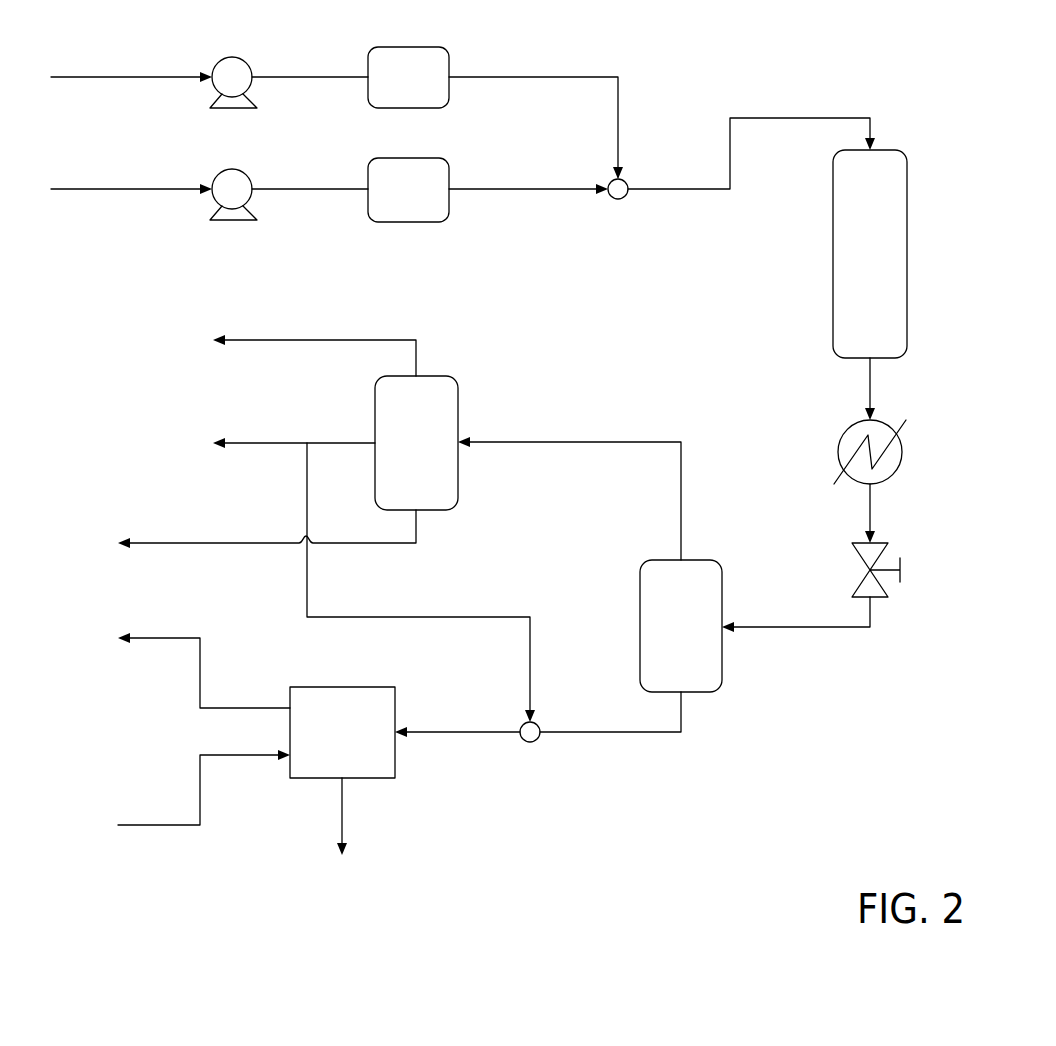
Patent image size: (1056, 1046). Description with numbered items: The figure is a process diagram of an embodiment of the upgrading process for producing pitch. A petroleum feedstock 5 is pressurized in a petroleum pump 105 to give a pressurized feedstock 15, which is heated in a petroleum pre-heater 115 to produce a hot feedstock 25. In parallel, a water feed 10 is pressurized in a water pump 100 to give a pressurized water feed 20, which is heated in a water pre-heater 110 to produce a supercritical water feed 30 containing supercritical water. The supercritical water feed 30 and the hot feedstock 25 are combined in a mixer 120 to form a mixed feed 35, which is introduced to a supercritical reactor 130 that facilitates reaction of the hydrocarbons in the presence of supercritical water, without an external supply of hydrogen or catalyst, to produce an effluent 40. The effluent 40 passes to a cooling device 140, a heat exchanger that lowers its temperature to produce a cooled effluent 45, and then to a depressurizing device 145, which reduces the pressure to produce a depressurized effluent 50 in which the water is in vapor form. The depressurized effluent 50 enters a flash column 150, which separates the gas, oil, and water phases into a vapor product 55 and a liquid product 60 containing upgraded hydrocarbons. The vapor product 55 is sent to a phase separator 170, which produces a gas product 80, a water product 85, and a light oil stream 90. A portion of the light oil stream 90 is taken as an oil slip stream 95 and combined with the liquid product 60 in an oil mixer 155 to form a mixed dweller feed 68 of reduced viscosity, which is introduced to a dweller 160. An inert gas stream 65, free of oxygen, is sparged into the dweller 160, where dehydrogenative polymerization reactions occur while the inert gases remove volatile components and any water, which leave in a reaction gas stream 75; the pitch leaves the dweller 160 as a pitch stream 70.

The petroleum feedstock 5 is at (128, 77).
The water feed 10 is at (128, 189).
The pressurized feedstock 15 is at (327, 77).
The pressurized water feed 20 is at (332, 189).
The hot feedstock 25 is at (560, 77).
The supercritical water feed 30 is at (558, 189).
The mixed feed 35 is at (808, 118).
The effluent 40 is at (871, 388).
The cooled effluent 45 is at (871, 510).
The depressurized effluent 50 is at (790, 628).
The vapor product 55 is at (537, 442).
The liquid product 60 is at (610, 733).
The inert gas stream 65 is at (167, 825).
The mixed dweller feed 68 is at (478, 732).
The pitch stream 70 is at (344, 808).
The reaction gas stream 75 is at (165, 638).
The gas product 80 is at (262, 340).
The water product 85 is at (225, 543).
The light oil stream 90 is at (262, 443).
The oil slip stream 95 is at (460, 617).
The water pump 100 is at (230, 168).
The petroleum pump 105 is at (230, 56).
The water pre-heater 110 is at (383, 203).
The petroleum pre-heater 115 is at (383, 91).
The mixer 120 is at (627, 198).
The supercritical reactor 130 is at (908, 252).
The cooling device 140 is at (902, 457).
The depressurizing device 145 is at (888, 588).
The flash column 150 is at (656, 641).
The oil mixer 155 is at (530, 742).
The dweller 160 is at (317, 744).
The phase separator 170 is at (391, 458).